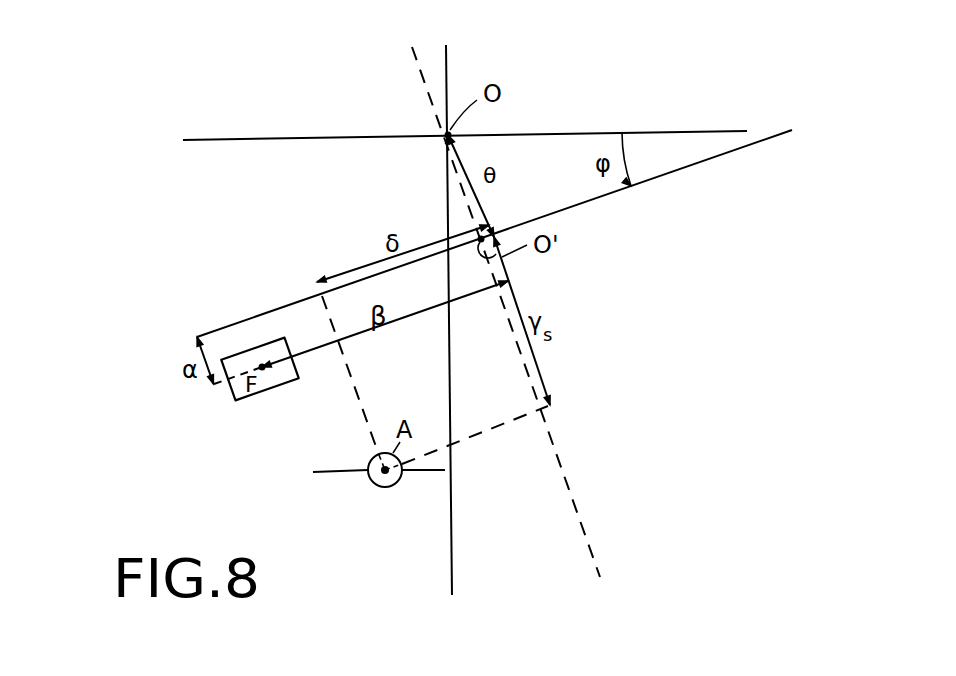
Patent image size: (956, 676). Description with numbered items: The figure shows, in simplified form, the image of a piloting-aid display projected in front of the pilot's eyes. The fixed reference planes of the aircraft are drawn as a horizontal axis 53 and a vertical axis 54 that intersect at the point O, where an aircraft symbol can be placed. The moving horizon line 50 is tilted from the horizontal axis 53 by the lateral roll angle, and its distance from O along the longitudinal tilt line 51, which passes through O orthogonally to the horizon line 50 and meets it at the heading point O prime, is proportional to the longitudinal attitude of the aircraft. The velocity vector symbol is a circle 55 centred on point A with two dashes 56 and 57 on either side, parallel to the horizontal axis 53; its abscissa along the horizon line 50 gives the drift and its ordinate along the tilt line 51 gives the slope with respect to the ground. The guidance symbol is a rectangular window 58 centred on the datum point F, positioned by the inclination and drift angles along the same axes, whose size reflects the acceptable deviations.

The moving horizon line 50 is at (683, 170).
The longitudinal tilt line 51 is at (585, 536).
The horizontal axis 53 is at (703, 130).
The vertical axis 54 is at (447, 65).
The circle 55 is at (378, 487).
The dash 56 is at (345, 472).
The dash 57 is at (420, 472).
The rectangular window 58 is at (260, 397).